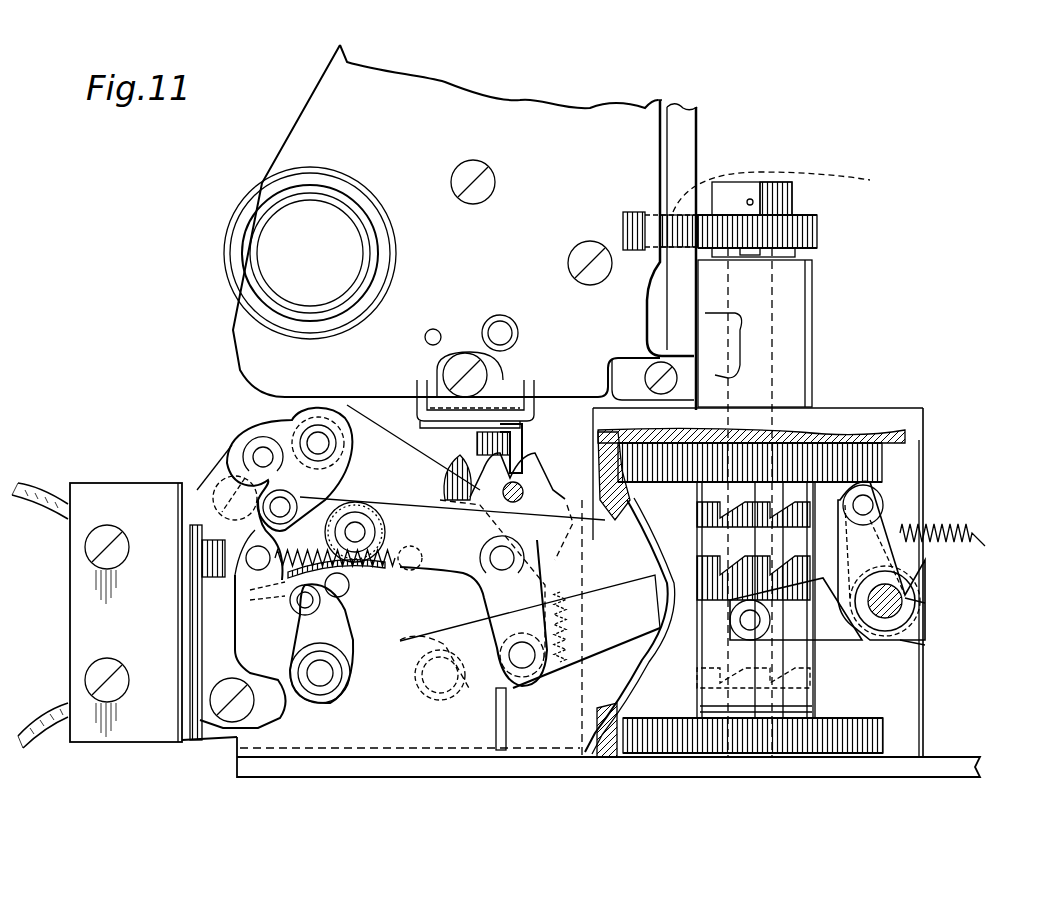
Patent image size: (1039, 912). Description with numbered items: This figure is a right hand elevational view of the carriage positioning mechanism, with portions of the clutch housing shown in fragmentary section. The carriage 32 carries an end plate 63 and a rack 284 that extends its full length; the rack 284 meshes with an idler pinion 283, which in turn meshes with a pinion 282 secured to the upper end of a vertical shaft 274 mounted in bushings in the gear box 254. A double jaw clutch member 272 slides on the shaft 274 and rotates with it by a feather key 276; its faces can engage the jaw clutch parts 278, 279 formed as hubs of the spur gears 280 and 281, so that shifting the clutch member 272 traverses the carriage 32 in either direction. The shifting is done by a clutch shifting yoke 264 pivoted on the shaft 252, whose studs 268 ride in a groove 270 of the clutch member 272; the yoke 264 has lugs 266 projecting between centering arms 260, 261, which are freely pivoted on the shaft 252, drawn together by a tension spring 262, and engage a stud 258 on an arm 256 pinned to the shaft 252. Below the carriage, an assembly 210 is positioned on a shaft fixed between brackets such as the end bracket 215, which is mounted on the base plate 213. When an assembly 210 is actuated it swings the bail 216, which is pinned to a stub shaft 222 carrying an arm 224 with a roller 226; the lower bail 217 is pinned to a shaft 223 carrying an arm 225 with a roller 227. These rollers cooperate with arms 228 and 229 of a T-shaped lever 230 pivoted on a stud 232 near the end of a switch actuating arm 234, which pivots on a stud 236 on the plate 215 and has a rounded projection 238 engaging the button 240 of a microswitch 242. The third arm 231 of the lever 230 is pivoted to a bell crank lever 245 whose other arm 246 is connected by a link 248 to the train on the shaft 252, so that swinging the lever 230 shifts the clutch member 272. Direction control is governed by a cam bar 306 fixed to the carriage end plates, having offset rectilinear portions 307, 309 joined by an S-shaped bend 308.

The end plate 63 is at (310, 118).
The carriage 32 is at (648, 100).
The rack 284 is at (634, 212).
The idler pinion 283 is at (800, 182).
The pinion 282 is at (800, 226).
The vertical shaft 274 is at (772, 328).
The cam bar 306 is at (485, 420).
The S-shaped bend 308 is at (523, 426).
The rectilinear portion 309 is at (523, 448).
The rectilinear portion 307 is at (477, 443).
The clutch and motor switch operating assembly 210 is at (450, 486).
The gear box 254 is at (855, 428).
The spur gear 280 is at (905, 432).
The arm 256 is at (923, 440).
The centering arm 260 is at (875, 498).
The lug 266 is at (910, 492).
The stud 258 is at (855, 524).
The shaft 252 is at (900, 604).
The tension spring 262 is at (796, 609).
The clutch shifting yoke 264 is at (865, 648).
The spur gear 281 is at (830, 718).
The jaw clutch part 279 is at (702, 702).
The double jaw clutch member 272 is at (720, 660).
The centering arm 261 is at (820, 506).
The feather key 276 is at (760, 530).
The jaw clutch part 278 is at (700, 494).
The microswitch 242 is at (100, 492).
The button 240 is at (217, 548).
The rounded projection 238 is at (203, 560).
The stud 236 is at (258, 450).
The switch actuating arm 234 is at (240, 462).
The arm 228 is at (235, 486).
The bail 216 is at (272, 430).
The stub shaft 222 is at (322, 432).
The arm 224 is at (348, 422).
The roller 226 is at (286, 504).
The third arm 231 is at (340, 492).
The bell crank lever 245 is at (510, 546).
The bail 217 is at (272, 606).
The stud 232 is at (250, 576).
The T-shaped lever 230 is at (250, 592).
The arm 229 is at (250, 602).
The roller 227 is at (322, 601).
The arm 225 is at (346, 632).
The arm 246 is at (430, 670).
The shaft 223 is at (335, 682).
The stud 268 is at (662, 619).
The groove 270 is at (656, 631).
The link 248 is at (566, 676).
The end bracket 215 is at (237, 746).
The base plate 213 is at (237, 769).